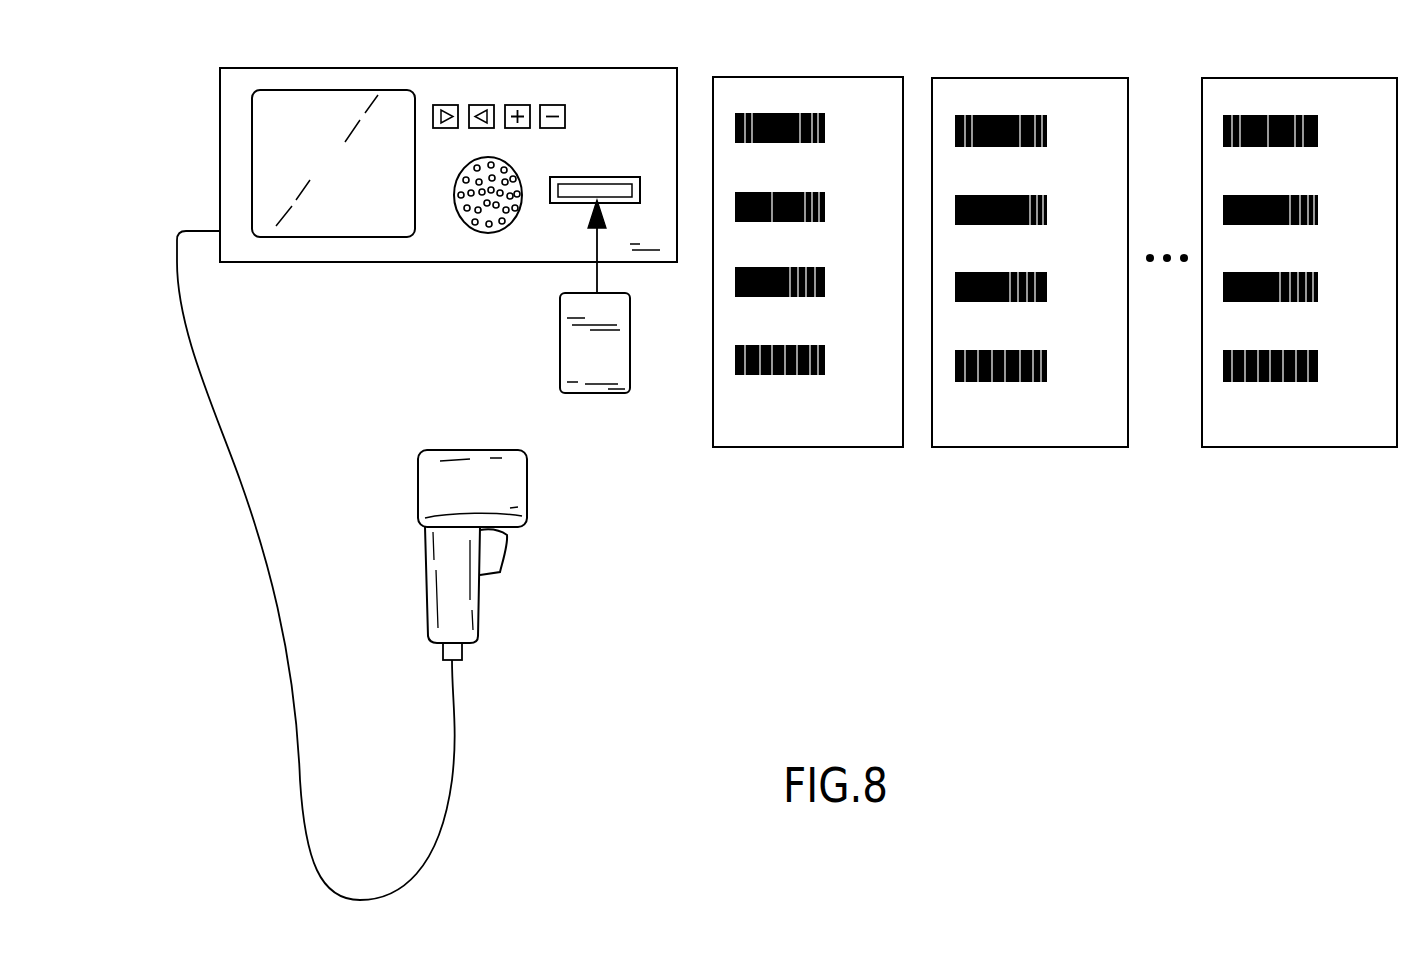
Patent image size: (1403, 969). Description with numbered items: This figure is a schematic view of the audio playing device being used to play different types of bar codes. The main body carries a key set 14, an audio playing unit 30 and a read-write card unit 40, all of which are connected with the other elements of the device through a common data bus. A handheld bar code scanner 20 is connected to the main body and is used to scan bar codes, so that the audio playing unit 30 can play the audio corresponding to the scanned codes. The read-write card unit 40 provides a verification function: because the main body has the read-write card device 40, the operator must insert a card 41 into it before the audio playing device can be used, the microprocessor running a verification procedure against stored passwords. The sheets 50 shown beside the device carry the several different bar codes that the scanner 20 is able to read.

The key set 14 is at (555, 90).
The bar code scanner 20 is at (460, 468).
The audio playing unit 30 is at (485, 222).
The read-write card unit 40 is at (617, 182).
The card 41 is at (590, 372).
The barcode sheets 50 is at (806, 113).